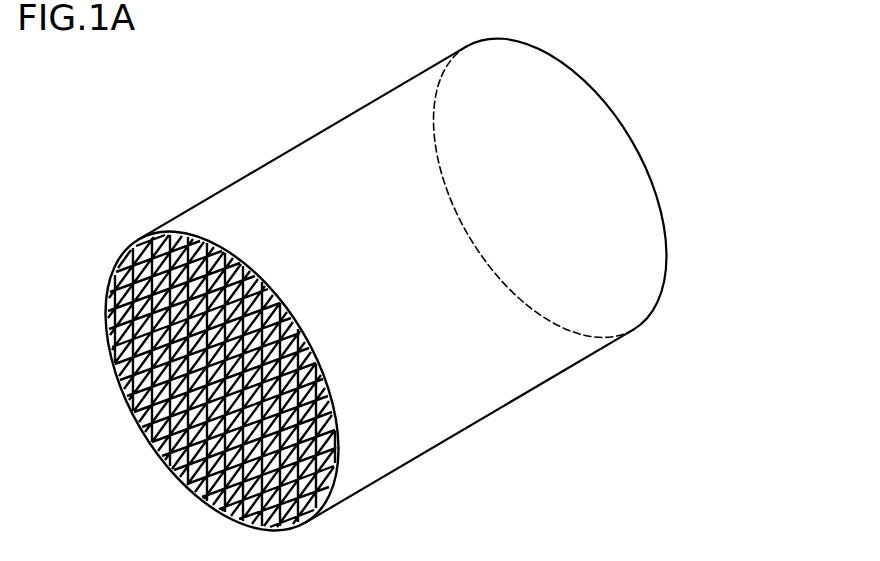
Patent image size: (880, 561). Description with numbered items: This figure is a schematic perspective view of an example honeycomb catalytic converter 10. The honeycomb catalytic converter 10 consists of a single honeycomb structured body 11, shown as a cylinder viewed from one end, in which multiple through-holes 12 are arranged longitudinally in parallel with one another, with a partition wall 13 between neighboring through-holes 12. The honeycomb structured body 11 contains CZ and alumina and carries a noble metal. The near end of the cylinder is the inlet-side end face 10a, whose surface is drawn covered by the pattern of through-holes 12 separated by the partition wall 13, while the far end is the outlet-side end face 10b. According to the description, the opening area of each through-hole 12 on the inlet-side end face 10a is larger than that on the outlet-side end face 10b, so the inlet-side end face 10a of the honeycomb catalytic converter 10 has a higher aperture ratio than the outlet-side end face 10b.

The honeycomb catalytic converter 10 is at (248, 127).
The inlet-side end face 10a is at (100, 337).
The outlet-side end face 10b is at (700, 107).
The honeycomb structured body 11 is at (100, 282).
The through-hole 12 is at (160, 443).
The partition wall 13 is at (182, 411).